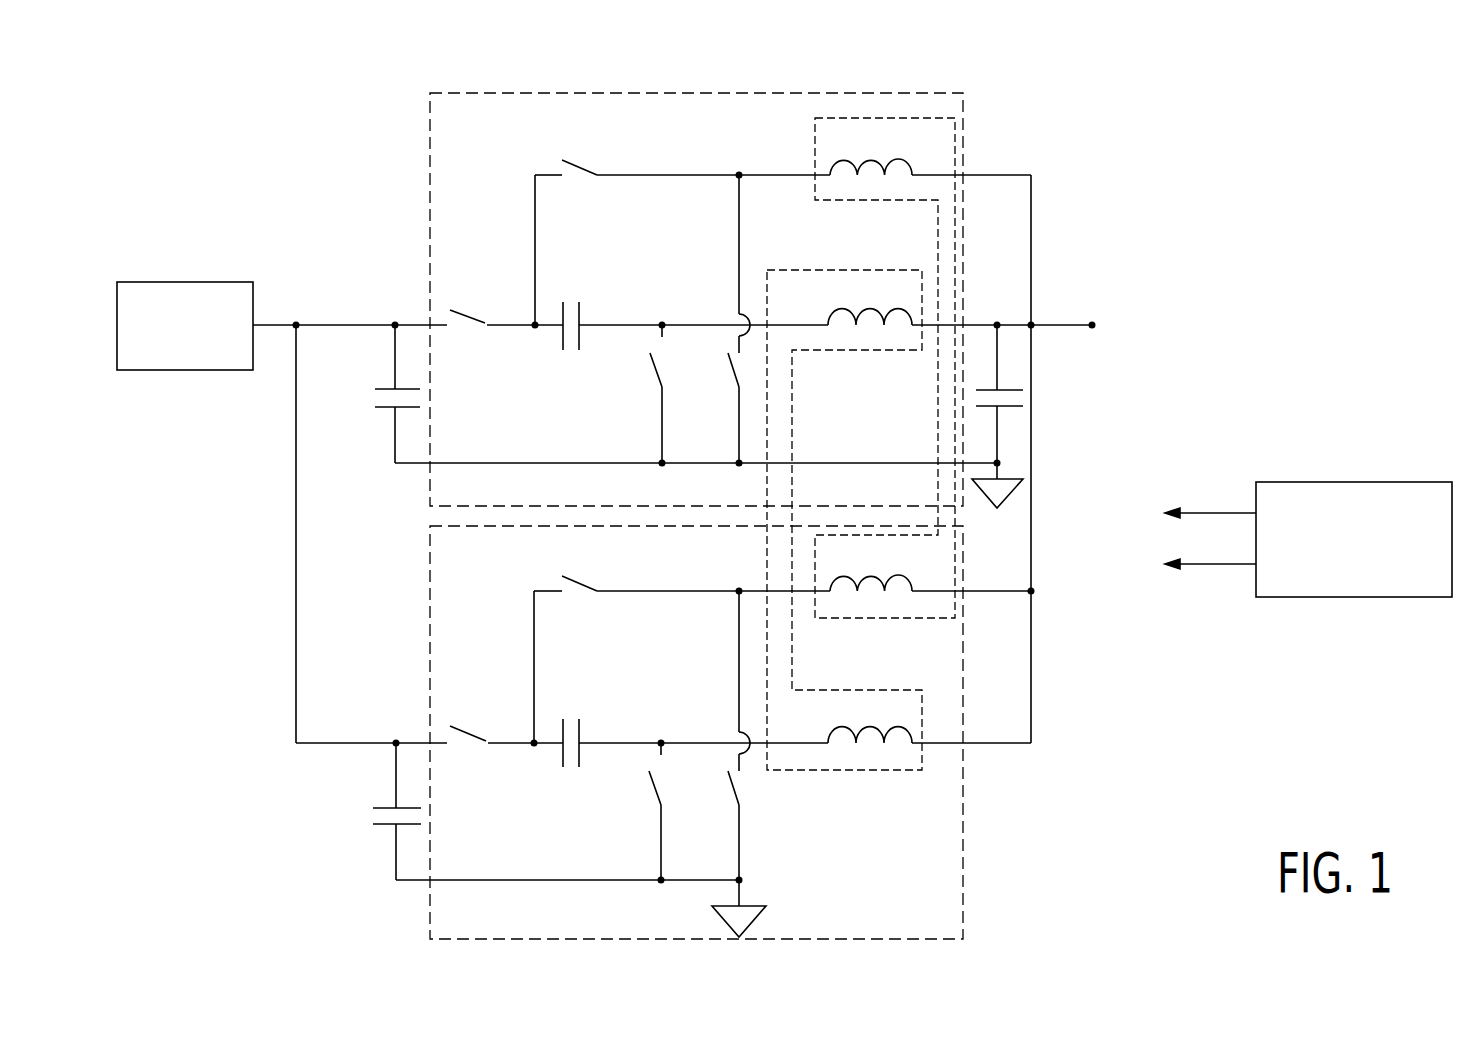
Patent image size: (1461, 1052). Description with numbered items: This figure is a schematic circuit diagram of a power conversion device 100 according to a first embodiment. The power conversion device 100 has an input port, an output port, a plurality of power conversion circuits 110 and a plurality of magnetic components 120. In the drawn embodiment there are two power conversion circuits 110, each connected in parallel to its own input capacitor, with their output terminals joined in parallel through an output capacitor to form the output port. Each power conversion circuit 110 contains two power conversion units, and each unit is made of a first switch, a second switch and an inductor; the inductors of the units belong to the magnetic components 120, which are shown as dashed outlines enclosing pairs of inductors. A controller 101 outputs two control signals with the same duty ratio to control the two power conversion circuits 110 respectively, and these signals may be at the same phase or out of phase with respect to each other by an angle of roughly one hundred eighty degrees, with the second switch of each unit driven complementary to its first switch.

The power conversion device 100 is at (1413, 153).
The controller 101 is at (1353, 482).
The power conversion circuit 110 is at (752, 105).
The magnetic component 120 is at (930, 130).